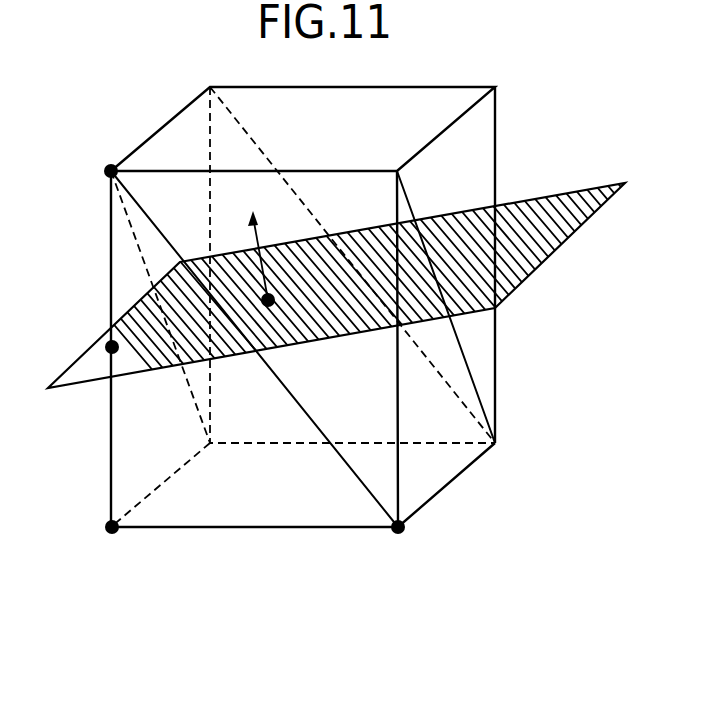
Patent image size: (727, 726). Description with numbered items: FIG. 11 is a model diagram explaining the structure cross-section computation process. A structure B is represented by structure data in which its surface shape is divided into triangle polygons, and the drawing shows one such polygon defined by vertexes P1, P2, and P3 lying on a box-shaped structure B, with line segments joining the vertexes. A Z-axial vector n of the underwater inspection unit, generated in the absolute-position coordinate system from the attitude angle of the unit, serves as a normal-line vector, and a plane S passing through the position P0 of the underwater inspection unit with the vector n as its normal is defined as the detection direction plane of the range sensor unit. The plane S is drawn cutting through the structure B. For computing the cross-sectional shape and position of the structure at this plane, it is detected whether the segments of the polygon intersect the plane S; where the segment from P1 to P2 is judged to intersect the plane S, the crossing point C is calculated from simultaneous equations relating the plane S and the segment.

The structure B is at (152, 137).
The plane S is at (563, 193).
The Z-axial vector n is at (258, 239).
The position of the underwater inspection unit P0 is at (274, 304).
The vertex of triangle polygon P1 is at (89, 171).
The vertex of triangle polygon P2 is at (108, 546).
The vertex of triangle polygon P3 is at (396, 546).
The crossing point C is at (102, 341).